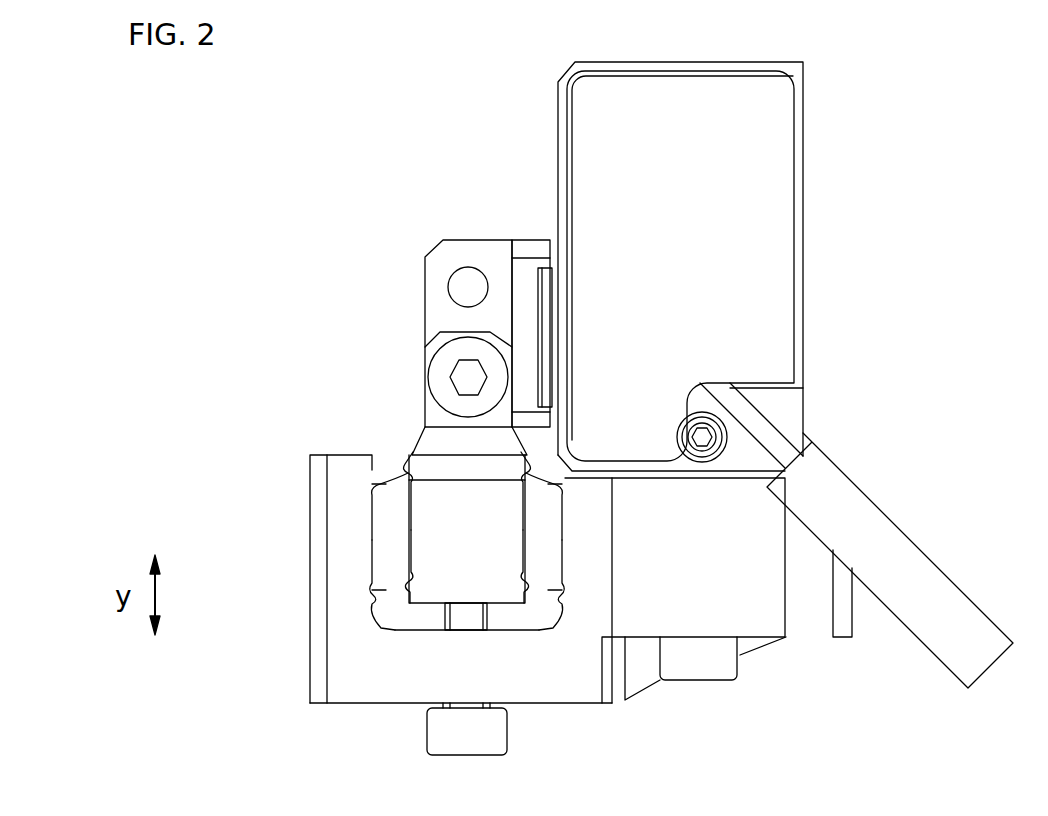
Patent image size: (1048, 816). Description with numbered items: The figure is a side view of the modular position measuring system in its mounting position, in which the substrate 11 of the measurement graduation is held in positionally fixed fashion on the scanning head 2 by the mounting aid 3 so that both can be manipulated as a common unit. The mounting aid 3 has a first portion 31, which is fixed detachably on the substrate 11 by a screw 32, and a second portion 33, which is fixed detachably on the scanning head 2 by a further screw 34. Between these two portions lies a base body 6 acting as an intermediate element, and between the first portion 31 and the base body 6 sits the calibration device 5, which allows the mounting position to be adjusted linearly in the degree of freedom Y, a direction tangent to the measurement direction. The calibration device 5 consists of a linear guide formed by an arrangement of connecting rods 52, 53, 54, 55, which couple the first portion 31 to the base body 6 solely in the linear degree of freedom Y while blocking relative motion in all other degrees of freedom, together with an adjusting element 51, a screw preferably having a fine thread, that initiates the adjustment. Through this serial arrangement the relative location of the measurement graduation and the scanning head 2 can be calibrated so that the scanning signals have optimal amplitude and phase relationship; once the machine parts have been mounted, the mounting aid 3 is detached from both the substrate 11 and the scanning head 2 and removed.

The scanning head 2 is at (773, 138).
The mounting aid 3 is at (805, 680).
The calibration device 5 is at (373, 524).
The base body 6 is at (408, 682).
The substrate 11 is at (545, 285).
The first portion 31 is at (442, 465).
The screw 32 is at (447, 365).
The second portion 33 is at (765, 557).
The screw 34 is at (697, 660).
The adjusting element 51 is at (477, 727).
The connecting rod 52 is at (376, 480).
The connecting rod 53 is at (387, 590).
The connecting rod 54 is at (525, 478).
The connecting rod 55 is at (545, 587).